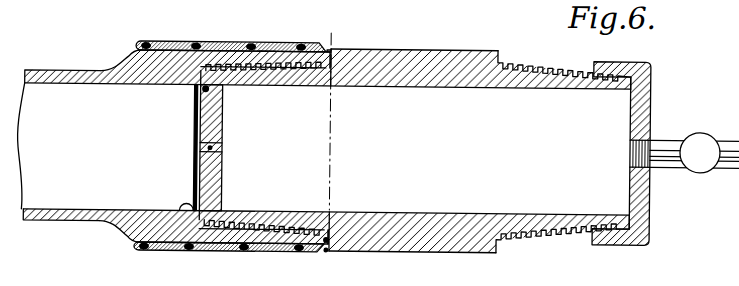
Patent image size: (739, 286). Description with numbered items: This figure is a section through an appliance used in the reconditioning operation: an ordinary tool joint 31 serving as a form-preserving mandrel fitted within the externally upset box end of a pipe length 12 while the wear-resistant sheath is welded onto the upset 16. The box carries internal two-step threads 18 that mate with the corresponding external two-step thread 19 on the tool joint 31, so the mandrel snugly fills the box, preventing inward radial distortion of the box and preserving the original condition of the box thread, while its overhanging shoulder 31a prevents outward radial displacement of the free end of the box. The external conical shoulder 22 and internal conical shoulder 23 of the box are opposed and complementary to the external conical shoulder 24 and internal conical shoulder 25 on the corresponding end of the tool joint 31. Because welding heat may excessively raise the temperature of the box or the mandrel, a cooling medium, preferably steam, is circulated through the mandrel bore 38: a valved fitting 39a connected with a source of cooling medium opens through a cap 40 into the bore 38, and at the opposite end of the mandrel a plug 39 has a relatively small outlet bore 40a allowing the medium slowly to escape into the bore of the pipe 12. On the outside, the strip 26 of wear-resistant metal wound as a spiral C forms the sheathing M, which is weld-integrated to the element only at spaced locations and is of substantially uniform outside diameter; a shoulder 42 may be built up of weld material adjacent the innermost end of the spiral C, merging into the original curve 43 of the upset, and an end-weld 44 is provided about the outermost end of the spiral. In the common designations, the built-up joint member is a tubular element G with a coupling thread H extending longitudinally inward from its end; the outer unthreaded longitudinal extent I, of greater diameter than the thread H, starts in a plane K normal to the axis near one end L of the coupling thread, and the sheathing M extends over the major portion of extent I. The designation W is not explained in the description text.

The pipe length 12 is at (58, 53).
The external upset 16 is at (131, 57).
The original curve of the upset 43 is at (124, 236).
The tubular element G is at (105, 85).
The tool joint 31 is at (437, 47).
The mandrel bore 38 is at (440, 102).
The external conical shoulder 22 is at (337, 50).
The external conical shoulder 24 is at (328, 242).
The overhanging shoulder 31a is at (332, 47).
The coupling thread H is at (281, 66).
The internal two-step threads 18 is at (262, 226).
The external two-step thread 19 is at (540, 65).
The cap 40 is at (642, 96).
The valved fitting 39a is at (667, 143).
The plug 39 is at (216, 115).
The internal conical shoulder 23 is at (193, 103).
The outlet bore 40a is at (222, 153).
The internal conical shoulder 25 is at (186, 212).
The strip 26 is at (242, 21).
The gasket stipple W is at (198, 44).
The spiral C is at (262, 43).
The outer unthreaded longitudinal extent I is at (265, 49).
The plane K— K is at (328, 43).
The shoulder 42 is at (142, 252).
The sheathing M is at (254, 253).
The end of coupling thread L is at (312, 233).
The end-weld 44 is at (328, 252).